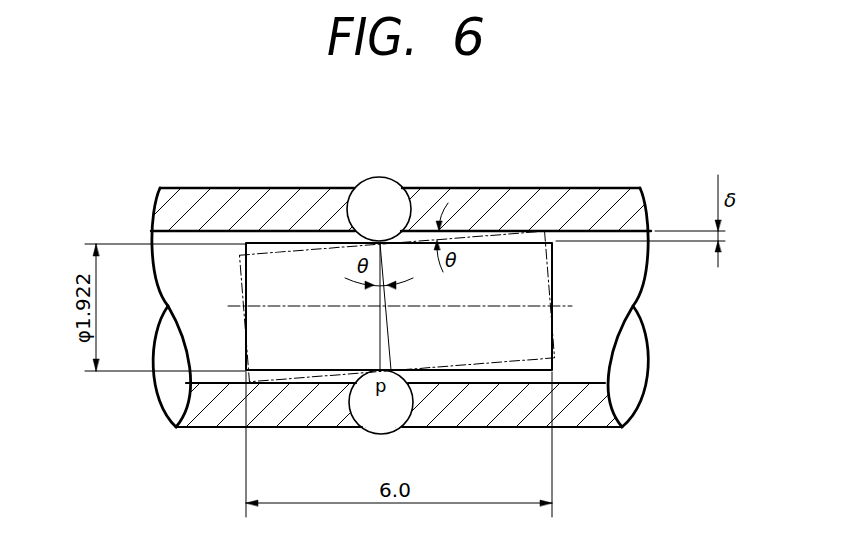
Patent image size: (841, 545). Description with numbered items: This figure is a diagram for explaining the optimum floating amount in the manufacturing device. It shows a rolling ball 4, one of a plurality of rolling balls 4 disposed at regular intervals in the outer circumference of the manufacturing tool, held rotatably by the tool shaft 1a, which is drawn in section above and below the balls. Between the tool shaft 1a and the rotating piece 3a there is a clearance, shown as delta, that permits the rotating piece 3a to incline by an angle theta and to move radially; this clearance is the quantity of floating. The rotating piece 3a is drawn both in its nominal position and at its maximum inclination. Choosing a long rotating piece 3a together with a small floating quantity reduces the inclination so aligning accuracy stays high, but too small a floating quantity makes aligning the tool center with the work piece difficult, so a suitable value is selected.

The rolling ball 4 is at (403, 123).
The tool shaft 1a is at (543, 186).
The rotating piece 3a is at (553, 292).